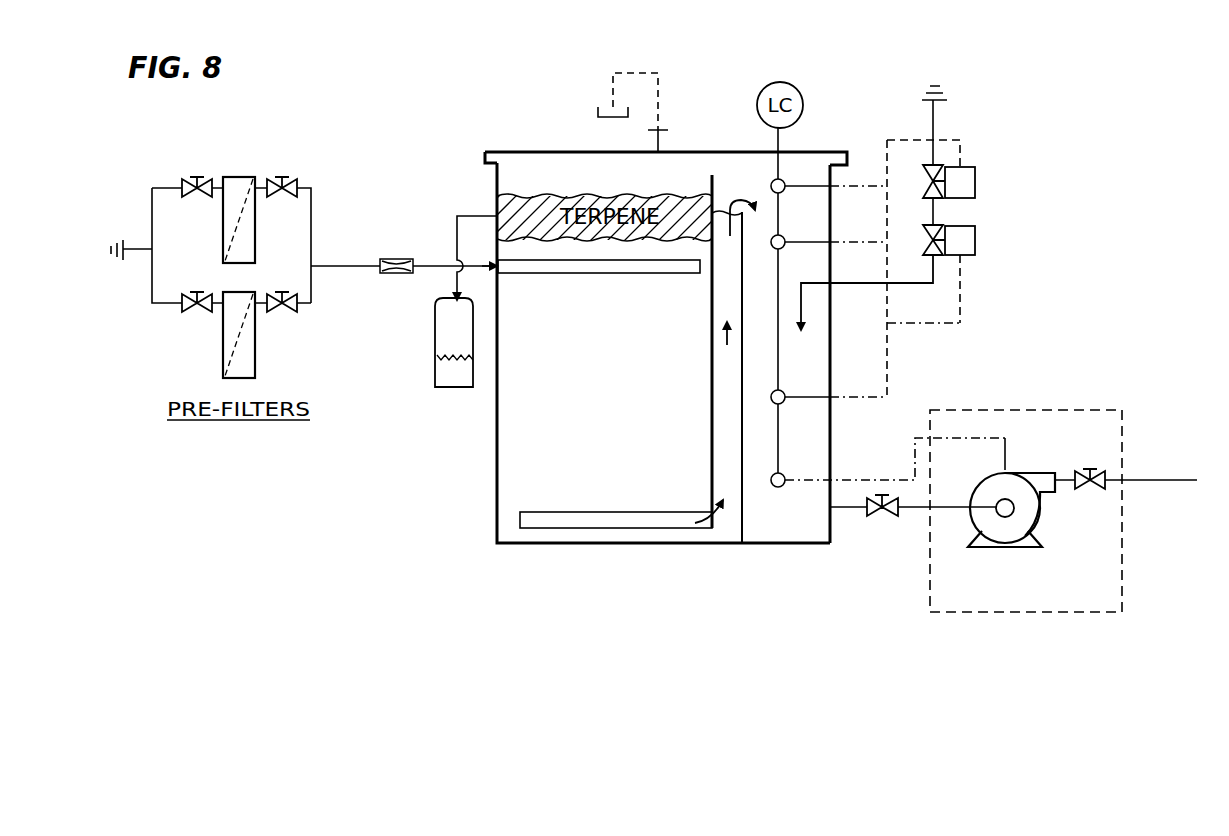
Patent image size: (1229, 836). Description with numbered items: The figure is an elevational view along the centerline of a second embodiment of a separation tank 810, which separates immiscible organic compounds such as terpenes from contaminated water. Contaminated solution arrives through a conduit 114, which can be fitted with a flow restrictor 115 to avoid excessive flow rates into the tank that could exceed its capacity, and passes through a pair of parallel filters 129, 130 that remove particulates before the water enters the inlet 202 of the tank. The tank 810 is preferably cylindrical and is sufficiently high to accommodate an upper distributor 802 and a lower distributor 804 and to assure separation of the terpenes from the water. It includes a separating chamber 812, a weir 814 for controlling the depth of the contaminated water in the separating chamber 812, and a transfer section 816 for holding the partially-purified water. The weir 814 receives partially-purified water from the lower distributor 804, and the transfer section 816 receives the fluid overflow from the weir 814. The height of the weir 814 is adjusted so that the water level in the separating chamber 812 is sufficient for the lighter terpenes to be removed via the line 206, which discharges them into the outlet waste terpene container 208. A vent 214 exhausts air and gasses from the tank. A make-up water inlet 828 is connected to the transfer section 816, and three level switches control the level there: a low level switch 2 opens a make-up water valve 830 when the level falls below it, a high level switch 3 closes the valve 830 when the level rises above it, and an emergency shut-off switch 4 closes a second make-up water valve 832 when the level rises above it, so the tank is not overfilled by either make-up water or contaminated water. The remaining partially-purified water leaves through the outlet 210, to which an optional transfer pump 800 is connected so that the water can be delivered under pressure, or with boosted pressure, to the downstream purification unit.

The filter 129 is at (238, 176).
The filter 130 is at (257, 370).
The conduit 114 is at (143, 250).
The flow restrictor 115 is at (386, 257).
The line 206 is at (476, 212).
The outlet waste terpene container 208 is at (458, 388).
The separation tank 810 is at (512, 150).
The separating chamber 812 is at (522, 479).
The transfer section 816 is at (800, 450).
The vent 214 is at (633, 72).
The upper distributor 802 is at (595, 270).
The inlet 202 is at (483, 274).
The lower distributor 804 is at (629, 511).
The weir 814 is at (710, 308).
The emergency shut-off switch 4 is at (820, 187).
The high level switch 3 is at (820, 243).
The low level switch 2 is at (820, 397).
The second make-up water valve 832 is at (968, 167).
The make-up water valve 830 is at (968, 226).
The make-up water inlet 828 is at (855, 284).
The transfer pump 800 is at (1023, 470).
The outlet 210 is at (833, 508).